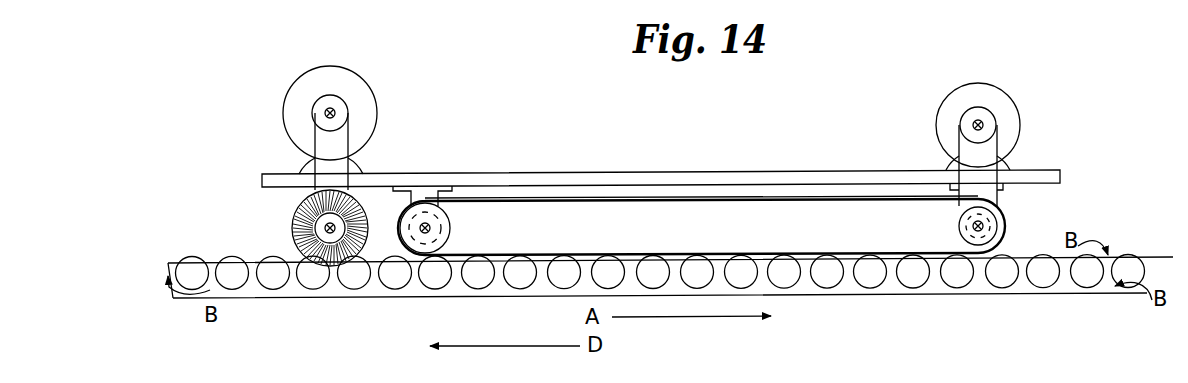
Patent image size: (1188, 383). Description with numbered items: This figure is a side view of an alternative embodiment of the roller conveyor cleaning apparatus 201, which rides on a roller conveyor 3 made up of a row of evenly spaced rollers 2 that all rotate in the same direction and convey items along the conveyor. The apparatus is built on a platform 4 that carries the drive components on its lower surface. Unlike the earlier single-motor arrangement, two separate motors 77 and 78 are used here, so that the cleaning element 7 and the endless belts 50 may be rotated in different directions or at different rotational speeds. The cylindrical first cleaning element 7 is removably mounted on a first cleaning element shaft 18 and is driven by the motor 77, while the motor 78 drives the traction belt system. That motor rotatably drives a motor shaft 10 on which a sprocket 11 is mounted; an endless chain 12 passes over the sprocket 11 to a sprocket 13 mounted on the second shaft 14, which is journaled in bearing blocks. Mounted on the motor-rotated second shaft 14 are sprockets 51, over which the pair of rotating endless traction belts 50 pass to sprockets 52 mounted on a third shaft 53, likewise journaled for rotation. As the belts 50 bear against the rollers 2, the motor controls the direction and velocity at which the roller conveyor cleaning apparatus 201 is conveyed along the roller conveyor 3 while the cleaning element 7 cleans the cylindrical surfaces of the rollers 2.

The rollers 2 is at (271, 290).
The roller conveyor 3 is at (670, 313).
The platform 4 is at (818, 171).
The first cleaning element 7 is at (295, 222).
The first cleaning element shaft 18 is at (316, 234).
The motor shaft 10 is at (984, 127).
The sprocket 11 is at (995, 113).
The endless chain 12 is at (1012, 147).
The sprocket 13 is at (999, 212).
The second shaft 14 is at (985, 232).
The endless traction belts 50 is at (557, 201).
The sprockets 51 is at (952, 226).
The sprockets 52 is at (451, 235).
The third shaft 53 is at (403, 257).
The motor 77 is at (372, 97).
The motor 78 is at (978, 84).
The roller conveyor cleaning apparatus 201 is at (1024, 108).